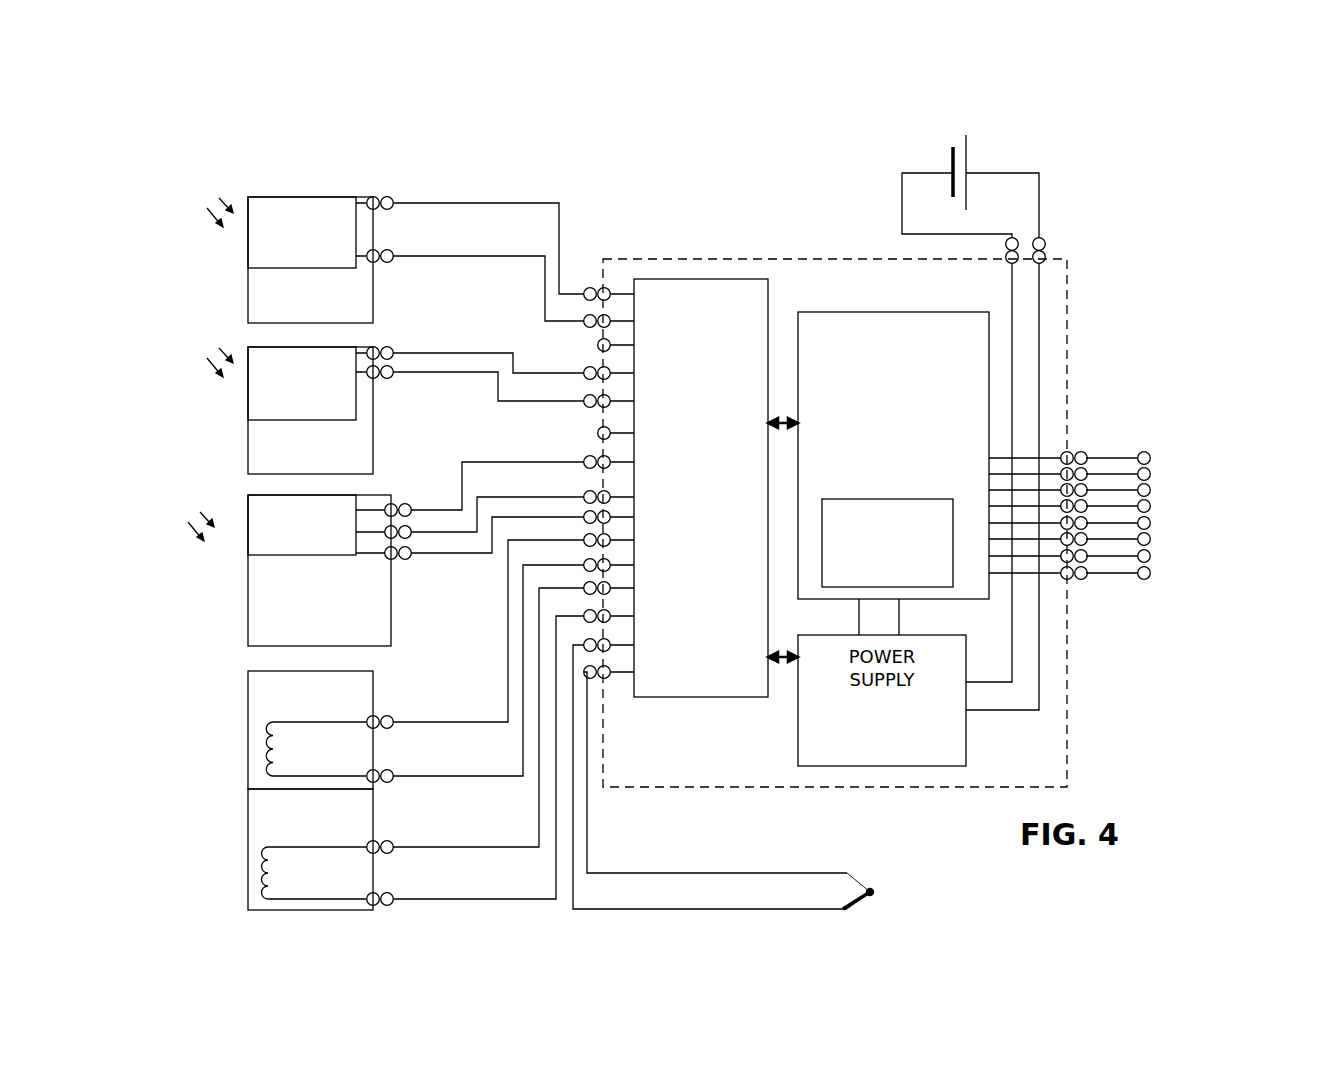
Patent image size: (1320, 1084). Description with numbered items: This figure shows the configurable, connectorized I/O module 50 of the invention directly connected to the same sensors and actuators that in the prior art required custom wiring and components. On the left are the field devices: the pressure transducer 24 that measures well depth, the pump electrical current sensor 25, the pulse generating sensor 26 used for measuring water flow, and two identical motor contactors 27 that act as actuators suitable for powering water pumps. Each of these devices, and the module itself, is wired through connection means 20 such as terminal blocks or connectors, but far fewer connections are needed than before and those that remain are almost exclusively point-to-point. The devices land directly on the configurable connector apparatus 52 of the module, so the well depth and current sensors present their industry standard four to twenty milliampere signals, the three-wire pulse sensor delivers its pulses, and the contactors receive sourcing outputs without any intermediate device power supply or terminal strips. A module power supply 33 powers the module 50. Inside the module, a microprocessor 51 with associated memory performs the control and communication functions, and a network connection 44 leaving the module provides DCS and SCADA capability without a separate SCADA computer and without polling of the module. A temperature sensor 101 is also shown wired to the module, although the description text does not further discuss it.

The connection means 20 is at (383, 196).
The pressure transducer 24 is at (247, 290).
The pump electrical current sensor 25 is at (247, 445).
The pulse generating sensor 26 is at (247, 590).
The motor contactor 27 is at (247, 760).
The module power supply 33 is at (1007, 107).
The network connection 44 is at (1175, 473).
The configurable connectorized I/O module 50 is at (832, 228).
The microprocessor 51 is at (972, 395).
The configurable connector apparatus 52 is at (752, 697).
The RTD temperature sensor 101 is at (752, 873).